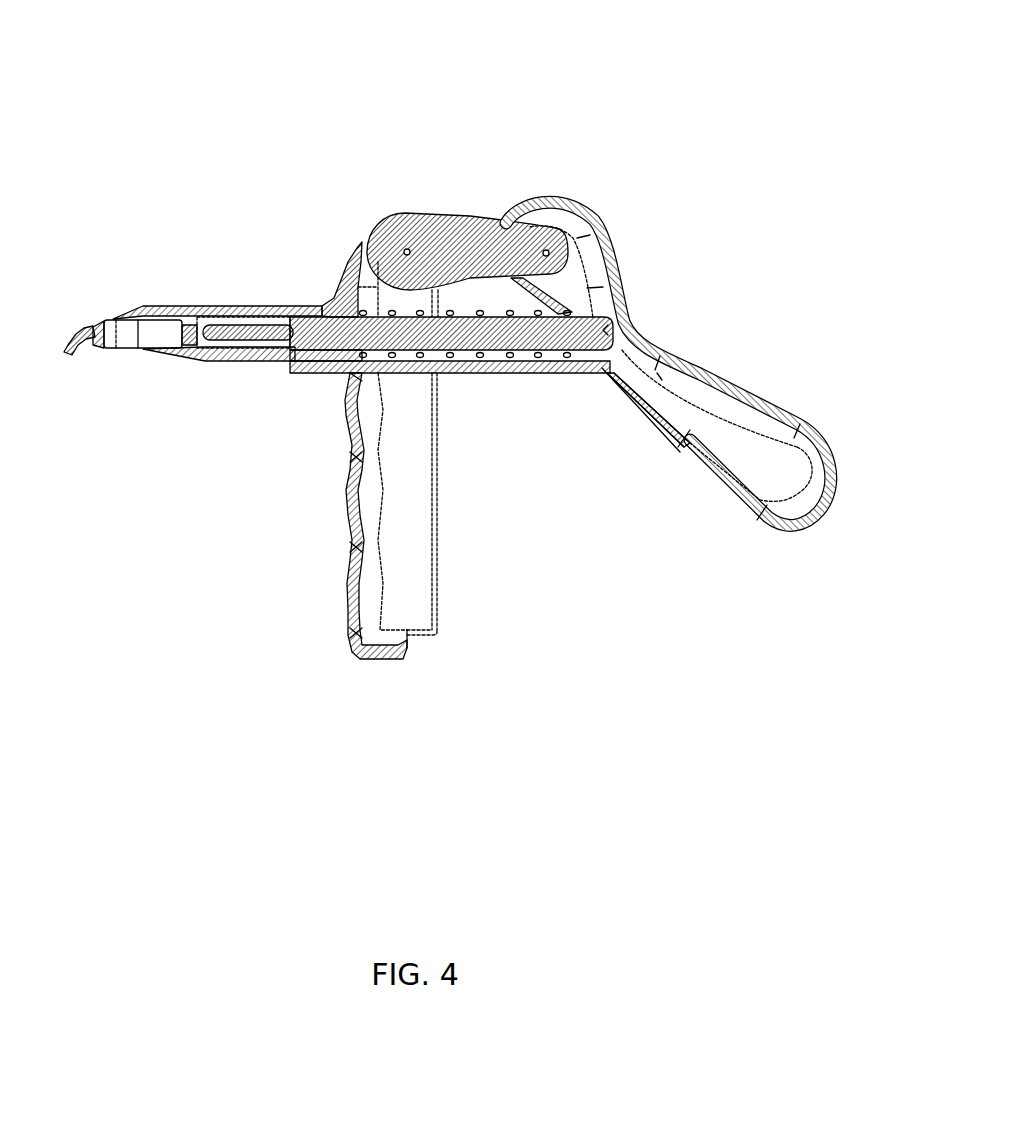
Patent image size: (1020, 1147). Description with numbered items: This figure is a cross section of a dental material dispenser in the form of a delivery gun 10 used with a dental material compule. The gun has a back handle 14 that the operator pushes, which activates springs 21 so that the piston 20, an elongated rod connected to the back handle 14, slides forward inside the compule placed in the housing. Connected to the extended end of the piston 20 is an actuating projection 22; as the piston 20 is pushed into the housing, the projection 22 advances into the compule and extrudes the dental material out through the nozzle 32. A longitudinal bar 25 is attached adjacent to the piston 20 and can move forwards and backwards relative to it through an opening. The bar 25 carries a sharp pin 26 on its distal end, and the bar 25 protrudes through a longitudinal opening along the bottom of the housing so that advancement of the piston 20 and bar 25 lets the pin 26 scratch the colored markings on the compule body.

The delivery gun 10 is at (630, 118).
The back handle 14 is at (700, 372).
The piston 20 is at (553, 364).
The springs 21 is at (498, 353).
The actuating projection 22 is at (232, 333).
The longitudinal bar 25 is at (470, 374).
The sharp pin 26 is at (298, 368).
The nozzle 32 is at (66, 358).